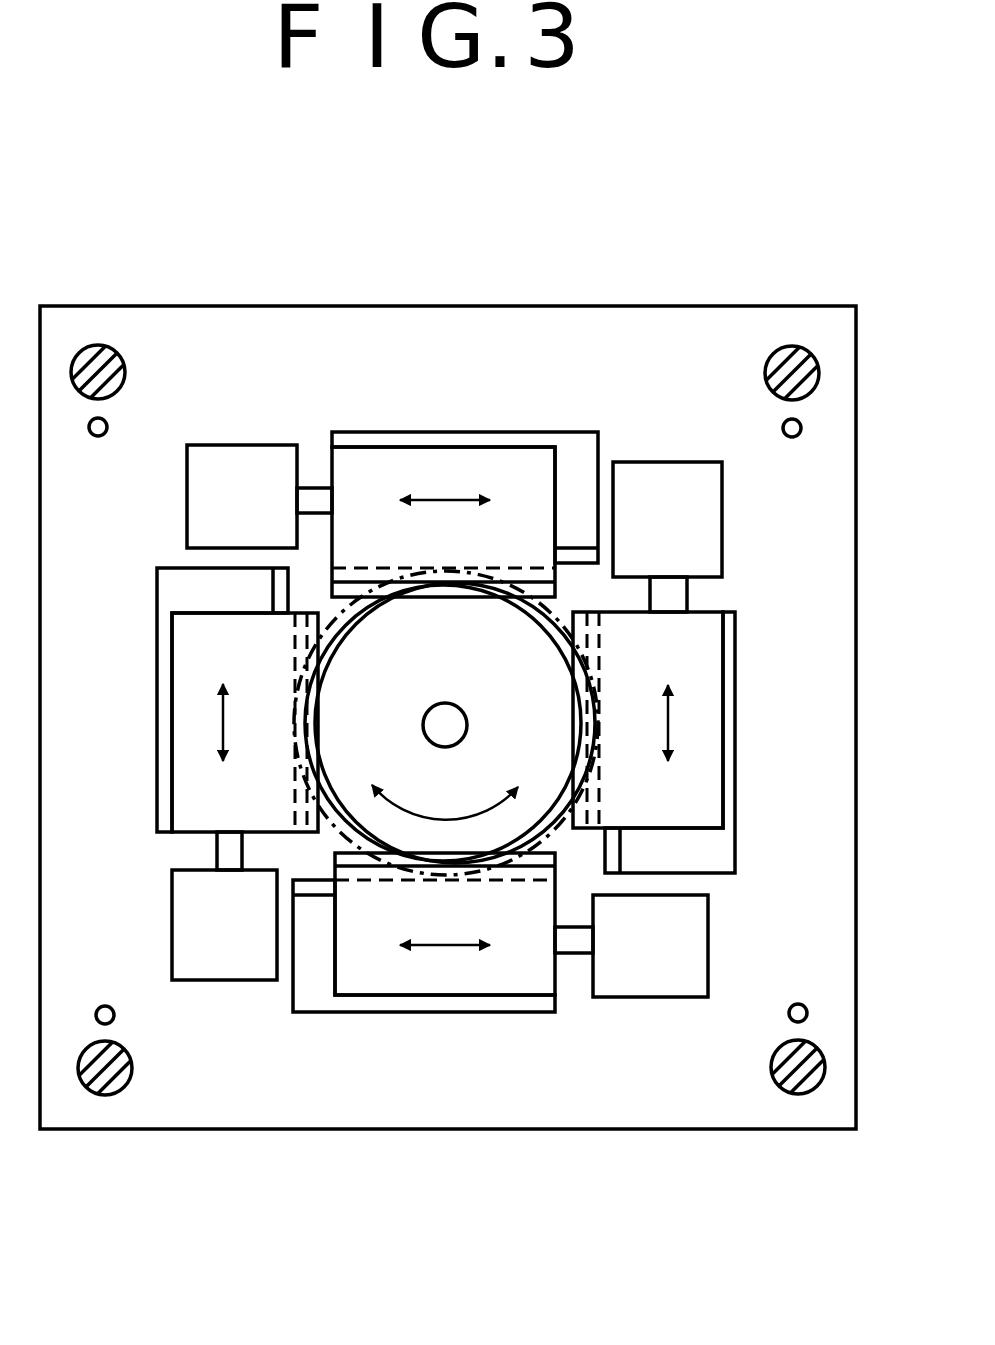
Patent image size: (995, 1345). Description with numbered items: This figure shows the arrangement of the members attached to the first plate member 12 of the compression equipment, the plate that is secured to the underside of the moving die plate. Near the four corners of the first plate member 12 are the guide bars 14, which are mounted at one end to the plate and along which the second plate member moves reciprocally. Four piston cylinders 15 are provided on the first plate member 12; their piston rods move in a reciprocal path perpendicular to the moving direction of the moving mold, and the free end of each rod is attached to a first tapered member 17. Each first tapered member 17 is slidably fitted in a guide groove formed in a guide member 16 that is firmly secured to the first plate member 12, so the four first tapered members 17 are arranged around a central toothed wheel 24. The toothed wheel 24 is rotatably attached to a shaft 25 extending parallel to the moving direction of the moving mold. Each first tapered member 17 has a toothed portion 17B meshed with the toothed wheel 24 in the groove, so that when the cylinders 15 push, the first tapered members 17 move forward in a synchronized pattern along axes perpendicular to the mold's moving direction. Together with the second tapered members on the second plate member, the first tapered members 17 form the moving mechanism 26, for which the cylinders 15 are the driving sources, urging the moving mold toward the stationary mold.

The first plate member 12 is at (219, 1122).
The guide bars 14 is at (97, 365).
The piston cylinders 15 is at (200, 500).
The guide member 16 is at (540, 432).
The first tapered member 17 is at (467, 462).
The toothed portion 17B is at (372, 582).
The toothed wheel 24 is at (523, 685).
The shaft 25 is at (467, 724).
The moving mechanism 26 is at (412, 972).